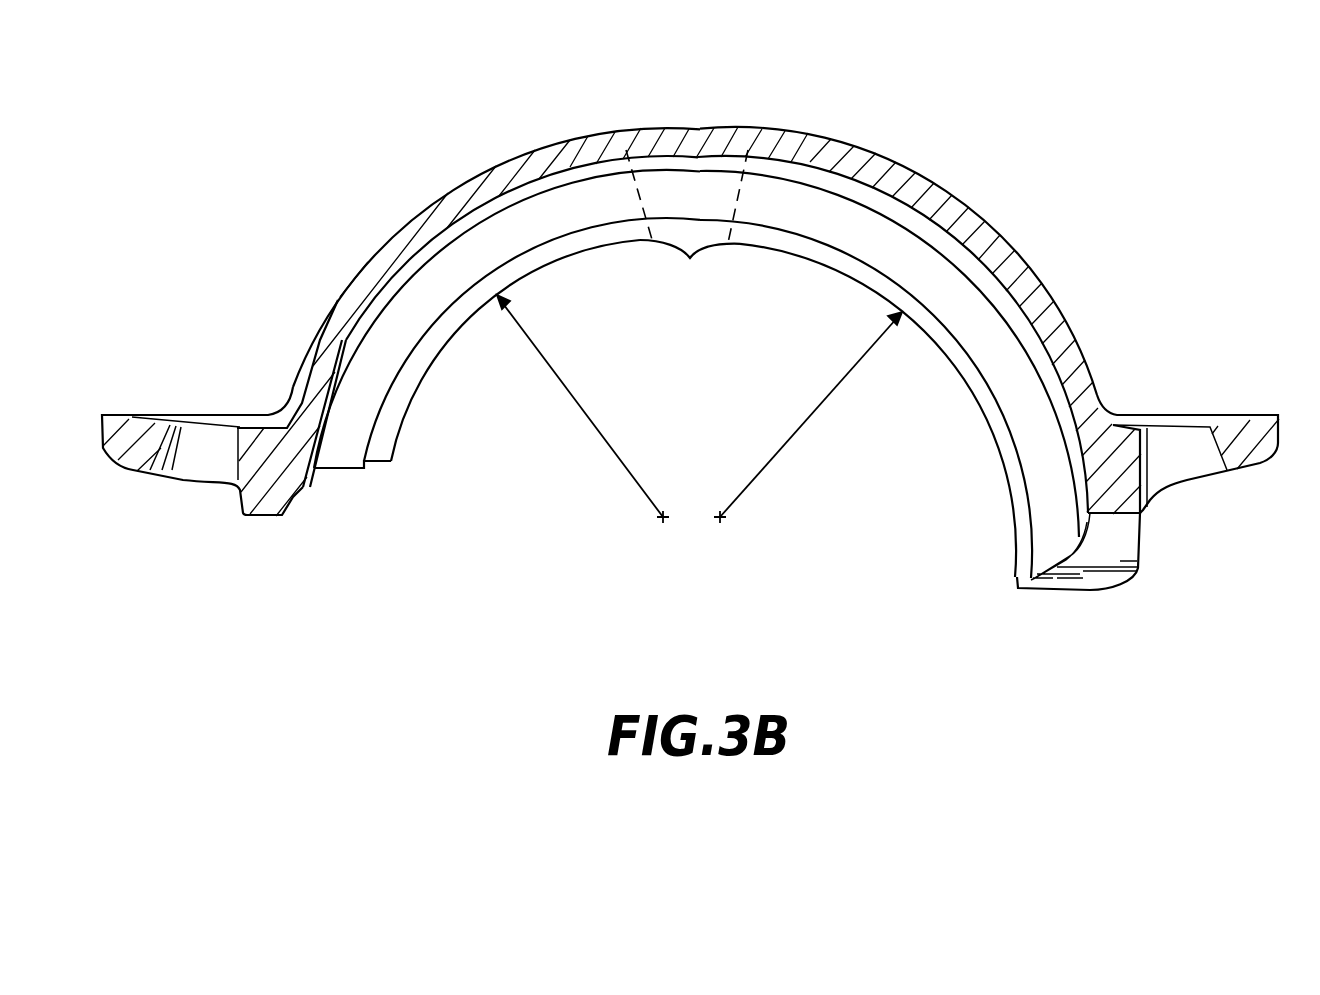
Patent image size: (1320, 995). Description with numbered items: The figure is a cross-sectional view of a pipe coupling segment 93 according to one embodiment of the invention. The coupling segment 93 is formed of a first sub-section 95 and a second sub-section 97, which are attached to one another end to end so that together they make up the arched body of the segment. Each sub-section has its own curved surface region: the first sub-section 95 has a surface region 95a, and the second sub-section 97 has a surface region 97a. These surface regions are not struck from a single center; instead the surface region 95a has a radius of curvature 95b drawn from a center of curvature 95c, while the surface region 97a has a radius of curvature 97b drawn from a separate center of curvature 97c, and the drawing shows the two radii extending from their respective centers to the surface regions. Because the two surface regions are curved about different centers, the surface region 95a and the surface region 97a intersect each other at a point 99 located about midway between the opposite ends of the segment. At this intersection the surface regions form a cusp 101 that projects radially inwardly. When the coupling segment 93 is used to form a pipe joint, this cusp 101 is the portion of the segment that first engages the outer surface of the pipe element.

The coupling segment 93 is at (957, 198).
The first sub-section 95 is at (1063, 316).
The surface region 95a is at (1004, 497).
The radius of curvature 95b is at (818, 408).
The center of curvature 95c is at (722, 520).
The second sub-section 97 is at (377, 252).
The surface region 97a is at (408, 413).
The radius of curvature 97b is at (580, 403).
The center of curvature 97c is at (660, 520).
The point 99 is at (710, 130).
The cusp 101 is at (690, 258).